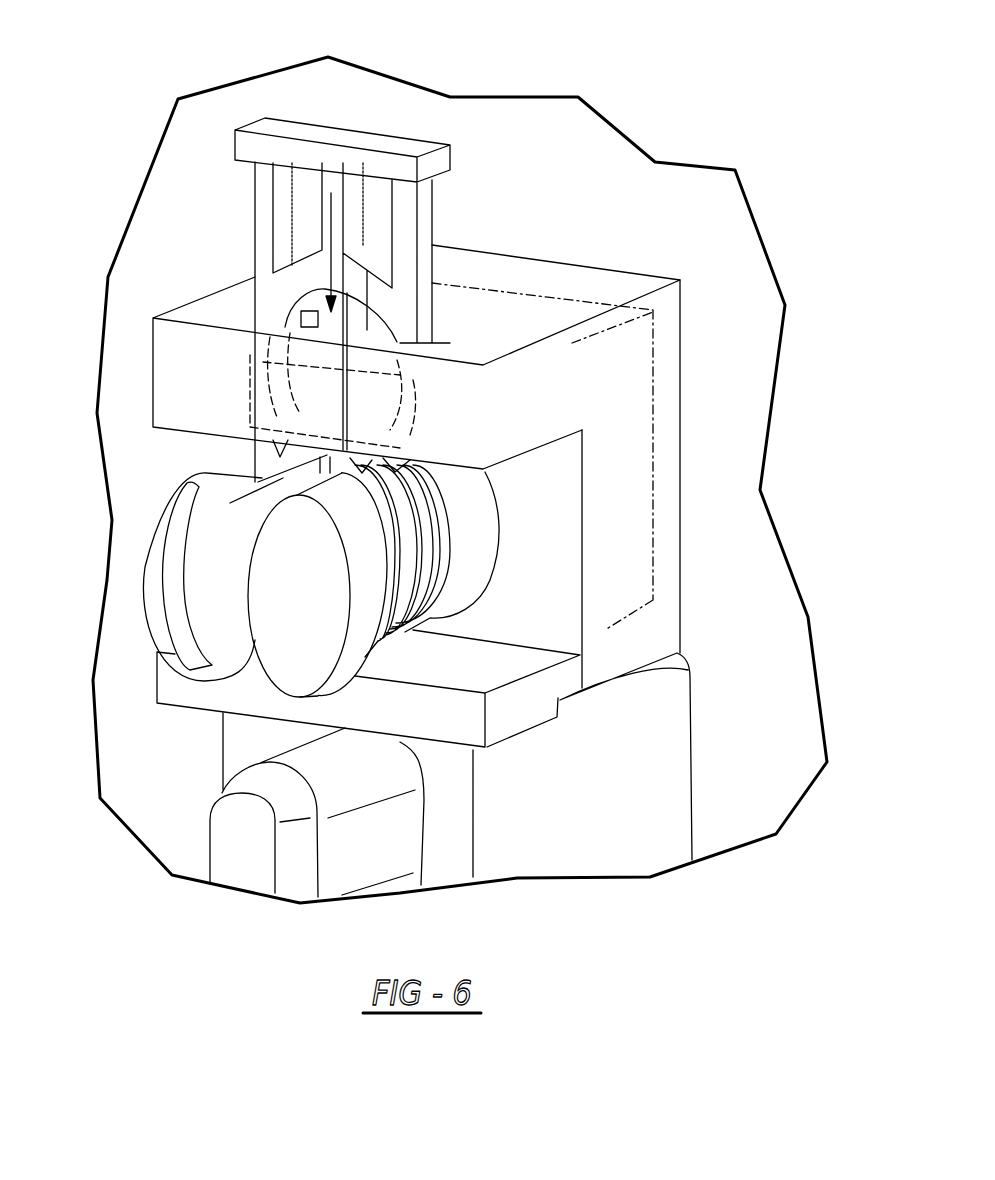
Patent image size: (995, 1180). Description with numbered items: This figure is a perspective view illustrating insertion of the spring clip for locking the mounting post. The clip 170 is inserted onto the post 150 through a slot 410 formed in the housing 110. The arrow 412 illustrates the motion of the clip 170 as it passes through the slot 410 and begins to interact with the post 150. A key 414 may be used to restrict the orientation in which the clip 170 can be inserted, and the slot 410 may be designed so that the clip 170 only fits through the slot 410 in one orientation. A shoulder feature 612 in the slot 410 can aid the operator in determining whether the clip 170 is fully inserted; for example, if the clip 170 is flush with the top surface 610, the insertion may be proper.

The housing 110 is at (503, 476).
The post 150 is at (480, 532).
The clip 170 is at (352, 137).
The slot 410 is at (437, 333).
The arrow 412 is at (330, 223).
The key 414 is at (293, 325).
The top surface 610 is at (505, 312).
The shoulder feature 612 is at (243, 336).